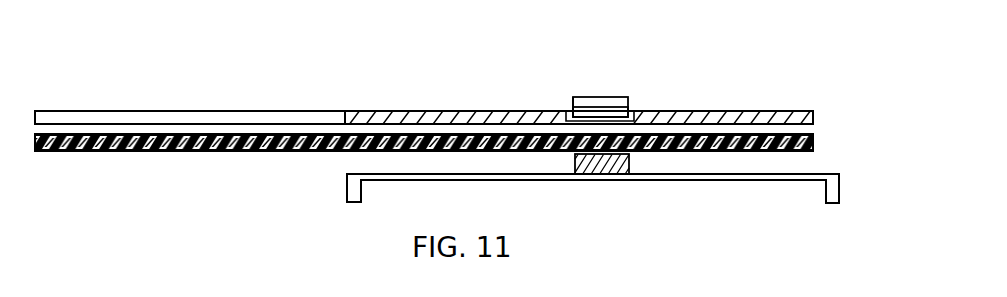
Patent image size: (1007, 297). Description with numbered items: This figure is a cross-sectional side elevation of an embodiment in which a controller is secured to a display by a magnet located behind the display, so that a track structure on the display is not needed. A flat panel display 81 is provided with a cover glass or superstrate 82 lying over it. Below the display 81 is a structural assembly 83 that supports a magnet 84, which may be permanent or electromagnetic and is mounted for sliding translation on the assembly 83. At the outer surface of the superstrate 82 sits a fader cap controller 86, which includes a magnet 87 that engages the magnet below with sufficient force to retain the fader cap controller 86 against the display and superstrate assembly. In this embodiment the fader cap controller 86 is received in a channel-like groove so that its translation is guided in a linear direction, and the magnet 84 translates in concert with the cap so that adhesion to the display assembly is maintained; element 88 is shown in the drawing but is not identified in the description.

The flat panel display 81 is at (113, 151).
The superstrate 82 is at (164, 110).
The structural assembly 83 is at (702, 198).
The magnet 84 is at (617, 174).
The fader cap controller 86 is at (573, 97).
The magnet 87 is at (607, 112).
The upper chip element 88 is at (590, 97).